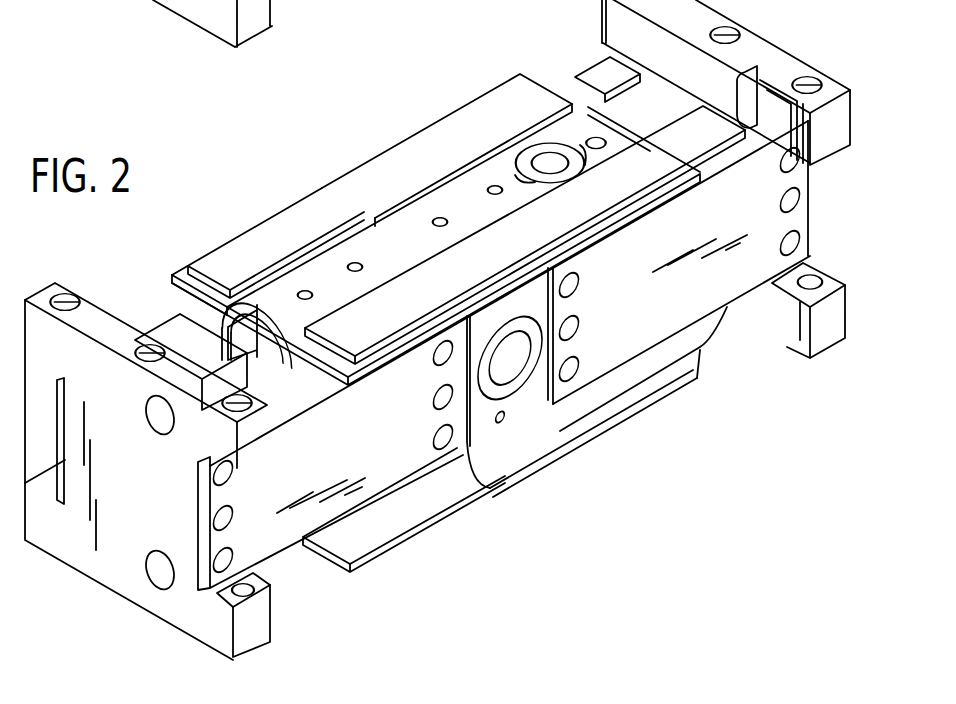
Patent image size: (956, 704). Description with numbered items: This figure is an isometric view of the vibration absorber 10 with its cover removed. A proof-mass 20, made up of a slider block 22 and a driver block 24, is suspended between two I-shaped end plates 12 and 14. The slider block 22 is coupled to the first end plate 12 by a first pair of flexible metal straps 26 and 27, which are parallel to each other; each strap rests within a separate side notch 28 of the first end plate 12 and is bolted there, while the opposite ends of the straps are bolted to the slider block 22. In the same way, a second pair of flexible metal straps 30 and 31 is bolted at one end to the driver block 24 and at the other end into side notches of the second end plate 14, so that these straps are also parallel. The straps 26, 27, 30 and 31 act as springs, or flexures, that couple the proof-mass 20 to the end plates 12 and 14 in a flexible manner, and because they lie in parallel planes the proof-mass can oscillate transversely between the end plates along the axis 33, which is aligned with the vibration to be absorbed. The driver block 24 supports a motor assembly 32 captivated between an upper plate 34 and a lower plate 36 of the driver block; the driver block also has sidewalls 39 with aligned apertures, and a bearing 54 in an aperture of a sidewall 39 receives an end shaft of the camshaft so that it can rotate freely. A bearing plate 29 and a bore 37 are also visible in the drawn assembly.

The linear motion assembly 10 is at (558, 540).
The first end plate 12 is at (63, 548).
The second end plate 14 is at (828, 335).
The proof-mass 20 is at (290, 200).
The slider block 22 is at (245, 238).
The driver block 24 is at (380, 163).
The flexible metal strap 26 is at (180, 327).
The flexible metal strap 27 is at (278, 538).
The side notches 28 is at (50, 485).
The front side plate 29 is at (373, 367).
The flexible metal strap 30 is at (603, 52).
The flexible metal strap 31 is at (690, 307).
The motor assembly 32 is at (530, 148).
The axis 33 is at (263, 135).
The upper plate 34 is at (593, 70).
The lower plate 36 is at (675, 362).
The ring bore 37 is at (485, 364).
The sidewalls 39 is at (527, 395).
The bearing 54 is at (518, 392).